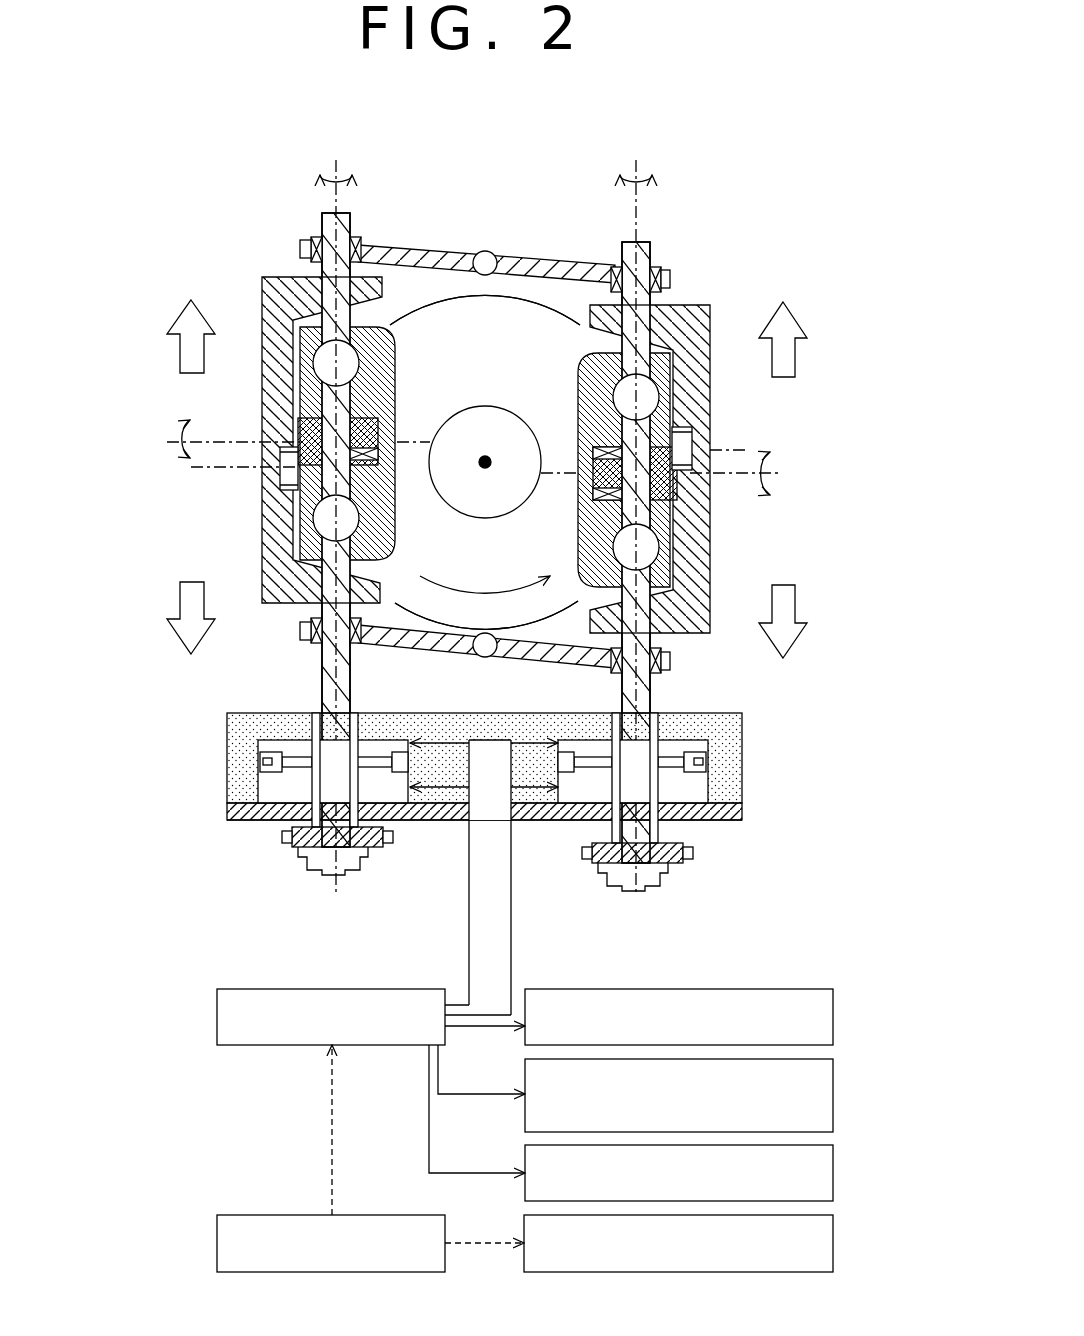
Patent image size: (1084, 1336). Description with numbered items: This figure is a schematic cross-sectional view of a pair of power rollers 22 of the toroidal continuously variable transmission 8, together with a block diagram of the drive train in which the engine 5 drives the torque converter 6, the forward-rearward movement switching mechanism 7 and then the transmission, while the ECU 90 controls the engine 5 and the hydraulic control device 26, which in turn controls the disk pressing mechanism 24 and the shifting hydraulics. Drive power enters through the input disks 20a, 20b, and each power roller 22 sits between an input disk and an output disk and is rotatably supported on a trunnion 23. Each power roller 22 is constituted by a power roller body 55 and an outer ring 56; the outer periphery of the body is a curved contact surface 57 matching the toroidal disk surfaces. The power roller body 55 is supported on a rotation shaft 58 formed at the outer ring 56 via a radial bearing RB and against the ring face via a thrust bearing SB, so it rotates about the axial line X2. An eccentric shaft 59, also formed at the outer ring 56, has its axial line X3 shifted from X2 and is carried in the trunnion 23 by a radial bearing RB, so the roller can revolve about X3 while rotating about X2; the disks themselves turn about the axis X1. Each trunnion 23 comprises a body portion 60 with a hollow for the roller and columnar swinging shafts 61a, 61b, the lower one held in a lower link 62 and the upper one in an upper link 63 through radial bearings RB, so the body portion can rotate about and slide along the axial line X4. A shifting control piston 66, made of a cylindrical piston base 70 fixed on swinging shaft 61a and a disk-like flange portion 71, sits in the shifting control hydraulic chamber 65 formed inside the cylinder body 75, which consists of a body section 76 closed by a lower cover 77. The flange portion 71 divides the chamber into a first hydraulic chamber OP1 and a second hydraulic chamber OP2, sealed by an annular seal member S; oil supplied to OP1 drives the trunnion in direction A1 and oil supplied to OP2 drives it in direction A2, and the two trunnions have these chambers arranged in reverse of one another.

The toroidal continuously variable transmission 8 is at (134, 272).
The input disk 20a is at (430, 312).
The input disk 20b is at (485, 462).
The power roller 22 is at (125, 508).
The trunnion 23 is at (318, 681).
The disk pressing mechanism 24 is at (833, 1173).
The hydraulic control device 26 is at (275, 989).
The engine 5 is at (833, 1243).
The torque converter 6 is at (833, 1015).
The forward-rearward movement switching mechanism 7 is at (833, 1094).
The power roller body 55 is at (300, 556).
The outer ring 56 is at (300, 522).
The curved contact surface 57 is at (395, 527).
The rotation shaft 58 is at (380, 430).
The eccentric shaft 59 is at (278, 472).
The body portion 60 is at (263, 588).
The swinging shaft 61a is at (320, 660).
The swinging shaft 61b is at (328, 222).
The lower link 62 is at (447, 645).
The upper link 63 is at (425, 258).
The shifting control hydraulic chamber 65 is at (462, 933).
The shifting control piston 66 is at (112, 725).
The piston base 70 is at (318, 712).
The flange portion 71 is at (300, 752).
The cylinder body 75 is at (835, 810).
The body section 76 is at (740, 792).
The lower cover 77 is at (743, 815).
The ECU 90 is at (370, 1215).
The radial bearing RB is at (356, 243).
The thrust bearing SB is at (350, 360).
The annular seal member S is at (267, 782).
The first hydraulic chamber OP1 is at (368, 898).
The second hydraulic chamber OP2 is at (427, 898).
The disk rotation axis X1 is at (485, 456).
The axial line X2 is at (220, 438).
The axial line X3 is at (200, 469).
The axial line X4 is at (330, 196).
The direction A1 is at (180, 602).
The direction A2 is at (180, 354).